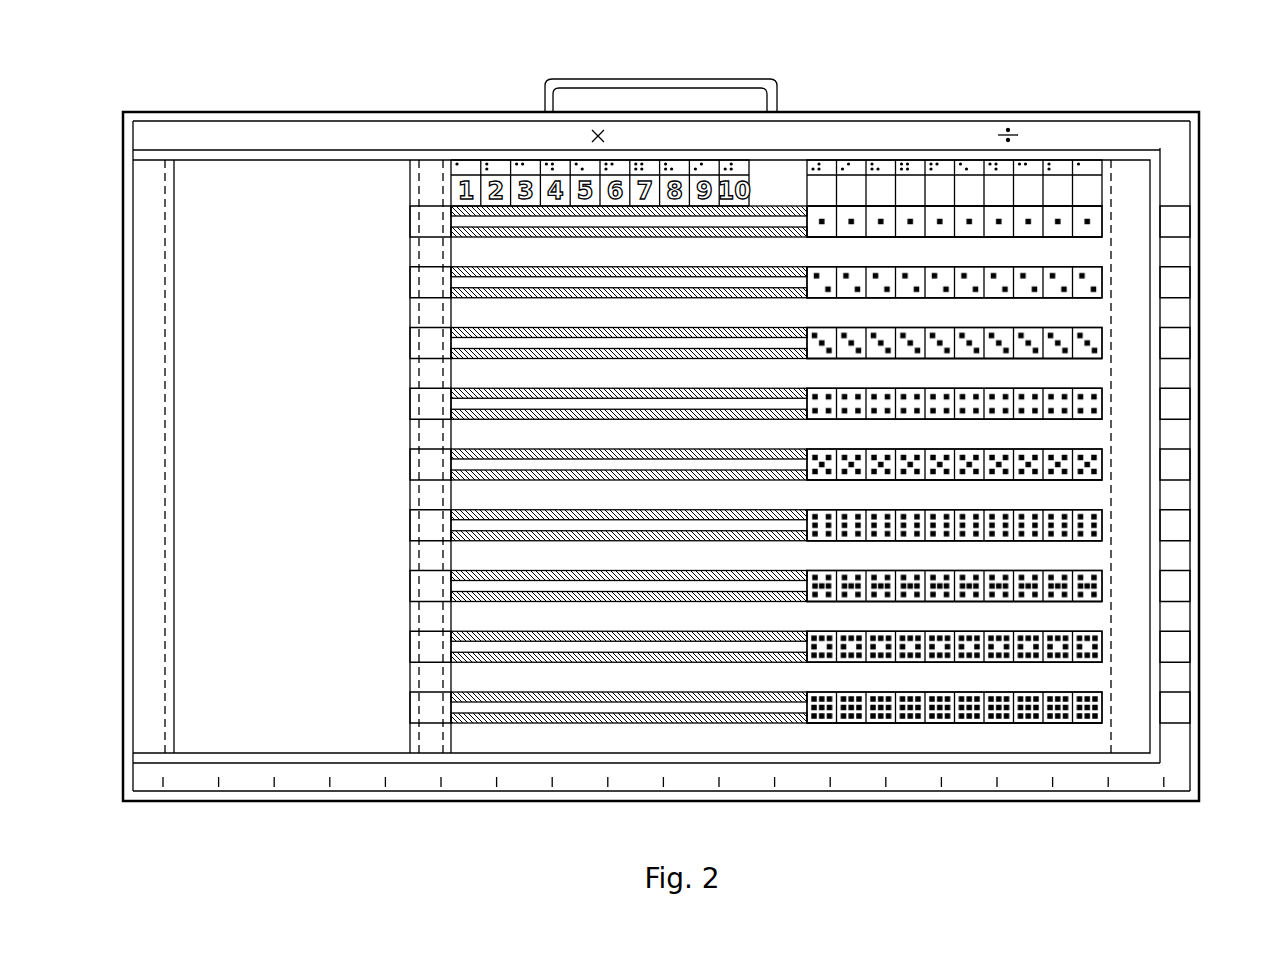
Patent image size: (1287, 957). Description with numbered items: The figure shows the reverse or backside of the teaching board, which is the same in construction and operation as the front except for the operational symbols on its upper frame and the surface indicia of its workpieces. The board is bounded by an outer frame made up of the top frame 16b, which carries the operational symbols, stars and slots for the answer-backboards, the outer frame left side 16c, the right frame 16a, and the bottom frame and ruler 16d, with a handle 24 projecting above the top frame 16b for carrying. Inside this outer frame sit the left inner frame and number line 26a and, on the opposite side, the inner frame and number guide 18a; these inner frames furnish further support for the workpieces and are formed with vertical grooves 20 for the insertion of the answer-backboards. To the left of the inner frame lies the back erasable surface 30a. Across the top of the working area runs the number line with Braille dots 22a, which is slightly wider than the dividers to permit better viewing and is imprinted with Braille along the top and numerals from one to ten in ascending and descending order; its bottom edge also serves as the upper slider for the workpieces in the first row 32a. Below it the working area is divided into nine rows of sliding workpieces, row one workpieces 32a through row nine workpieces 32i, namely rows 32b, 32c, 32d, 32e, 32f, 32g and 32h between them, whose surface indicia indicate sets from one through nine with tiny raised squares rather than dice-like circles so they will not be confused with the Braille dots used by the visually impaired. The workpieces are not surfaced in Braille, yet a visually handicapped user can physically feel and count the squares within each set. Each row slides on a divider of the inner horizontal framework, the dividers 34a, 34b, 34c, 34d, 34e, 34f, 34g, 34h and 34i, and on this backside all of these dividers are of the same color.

The right frame 16a is at (1182, 203).
The top frame 16b is at (1159, 137).
The outer frame left side 16c is at (145, 482).
The bottom frame and ruler 16d is at (641, 792).
The inner frame and number guide 18a is at (1125, 167).
The grooves 20 is at (1108, 172).
The number line with Braille dots 22a is at (1060, 170).
The handle 24 is at (645, 82).
The left inner frame and number line 26a is at (431, 170).
The back erasable surface 30a is at (385, 170).
The row one workpieces 32a is at (1088, 221).
The row two workpieces 32b is at (1088, 282).
The row three workpieces 32c is at (1088, 342).
The row four workpieces 32d is at (1088, 403).
The row five workpieces 32e is at (1088, 464).
The row six workpieces 32f is at (1088, 525).
The row seven workpieces 32g is at (1088, 586).
The row eight workpieces 32h is at (1088, 646).
The row nine workpieces 32i is at (1088, 707).
The divider 34a is at (1072, 250).
The divider 34b is at (1072, 311).
The divider 34c is at (1072, 372).
The divider 34d is at (1072, 432).
The divider 34e is at (1072, 493).
The divider 34f is at (1072, 554).
The divider 34g is at (1072, 614).
The divider 34h is at (1072, 675).
The divider 34i is at (1072, 736).